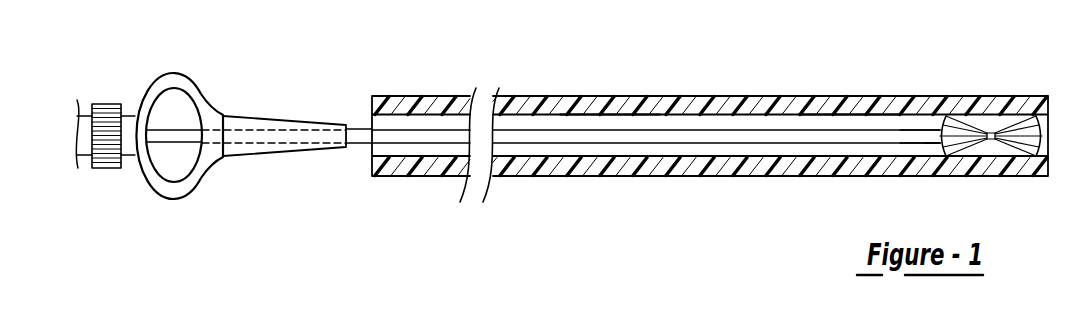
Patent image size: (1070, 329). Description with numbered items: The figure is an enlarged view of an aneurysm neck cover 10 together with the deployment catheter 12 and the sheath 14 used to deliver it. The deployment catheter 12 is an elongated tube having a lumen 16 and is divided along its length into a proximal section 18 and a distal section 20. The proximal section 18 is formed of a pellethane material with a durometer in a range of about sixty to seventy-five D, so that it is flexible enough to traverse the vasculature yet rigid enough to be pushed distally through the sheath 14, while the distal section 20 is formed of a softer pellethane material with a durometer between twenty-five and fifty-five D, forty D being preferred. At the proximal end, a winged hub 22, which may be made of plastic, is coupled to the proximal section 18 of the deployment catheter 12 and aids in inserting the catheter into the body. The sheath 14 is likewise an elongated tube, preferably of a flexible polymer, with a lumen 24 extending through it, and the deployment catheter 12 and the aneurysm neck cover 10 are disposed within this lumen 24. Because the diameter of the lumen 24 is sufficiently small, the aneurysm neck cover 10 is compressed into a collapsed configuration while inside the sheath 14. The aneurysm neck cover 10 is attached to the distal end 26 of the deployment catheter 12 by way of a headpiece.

The aneurysm neck cover 10 is at (992, 132).
The deployment catheter 12 is at (850, 128).
The sheath 14 is at (755, 97).
The lumen 16 is at (677, 138).
The proximal section 18 is at (416, 128).
The distal section 20 is at (920, 130).
The winged hub 22 is at (163, 73).
The lumen 24 is at (607, 123).
The distal end 26 is at (938, 148).